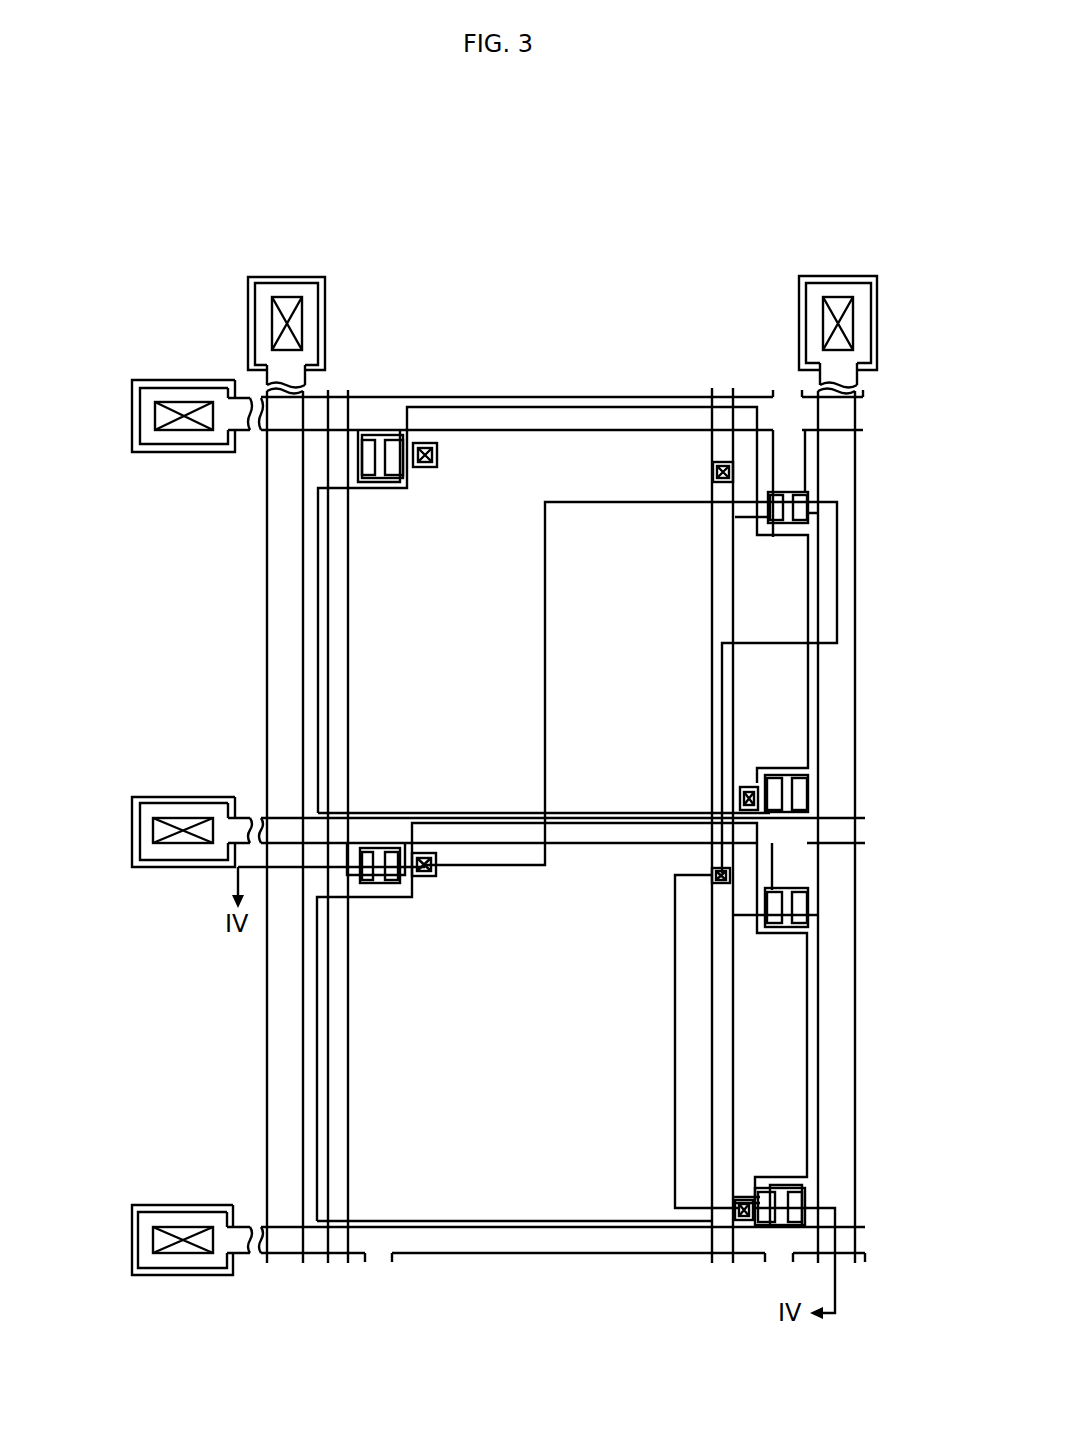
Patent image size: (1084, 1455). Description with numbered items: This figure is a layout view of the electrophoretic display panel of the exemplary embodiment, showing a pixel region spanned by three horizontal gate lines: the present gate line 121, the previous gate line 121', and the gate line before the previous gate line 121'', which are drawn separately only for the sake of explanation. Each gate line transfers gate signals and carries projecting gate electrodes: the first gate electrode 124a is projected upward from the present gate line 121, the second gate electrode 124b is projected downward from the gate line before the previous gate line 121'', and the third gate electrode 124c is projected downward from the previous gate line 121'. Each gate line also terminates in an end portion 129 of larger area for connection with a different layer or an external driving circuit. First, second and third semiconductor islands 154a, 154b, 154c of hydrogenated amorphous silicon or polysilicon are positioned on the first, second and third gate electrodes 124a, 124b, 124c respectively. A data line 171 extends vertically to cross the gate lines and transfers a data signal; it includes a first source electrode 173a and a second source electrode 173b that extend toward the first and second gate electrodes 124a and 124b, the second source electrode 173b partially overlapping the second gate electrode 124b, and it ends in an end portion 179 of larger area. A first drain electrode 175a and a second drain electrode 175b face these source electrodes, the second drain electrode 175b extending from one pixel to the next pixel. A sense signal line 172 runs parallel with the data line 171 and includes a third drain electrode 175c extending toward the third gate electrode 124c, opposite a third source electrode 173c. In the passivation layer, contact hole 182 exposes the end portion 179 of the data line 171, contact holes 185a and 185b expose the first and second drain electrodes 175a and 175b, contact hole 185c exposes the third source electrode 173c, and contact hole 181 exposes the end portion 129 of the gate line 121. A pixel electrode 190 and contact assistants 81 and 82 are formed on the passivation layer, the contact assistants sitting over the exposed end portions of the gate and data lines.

The gate line 121 is at (563, 1282).
The previous gate line 121' is at (563, 862).
The gate line before the previous gate line 121'' is at (562, 440).
The first gate electrode 124a is at (805, 1200).
The second gate electrode 124b is at (808, 445).
The third gate electrode 124c is at (378, 875).
The end portion of gate line 129 is at (187, 1275).
The first semiconductor island 154a is at (780, 1225).
The second semiconductor island 154b is at (793, 512).
The third semiconductor island 154c is at (410, 875).
The data line 171 is at (858, 1125).
The sense signal line 172 is at (330, 1087).
The first source electrode 173a is at (820, 1237).
The second source electrode 173b is at (812, 530).
The third source electrode 173c is at (430, 865).
The first drain electrode 175a is at (730, 1240).
The second drain electrode 175b is at (738, 596).
The third drain electrode 175c is at (370, 880).
The end portion of data line 179 is at (292, 277).
The contact hole 181 is at (153, 1240).
The contact hole 182 is at (308, 310).
The contact hole 185a is at (745, 1200).
The contact hole 185b is at (715, 878).
The contact hole 185c is at (425, 853).
The pixel electrode 190 is at (305, 998).
The contact assistant 81 is at (138, 1275).
The contact assistant 82 is at (322, 322).